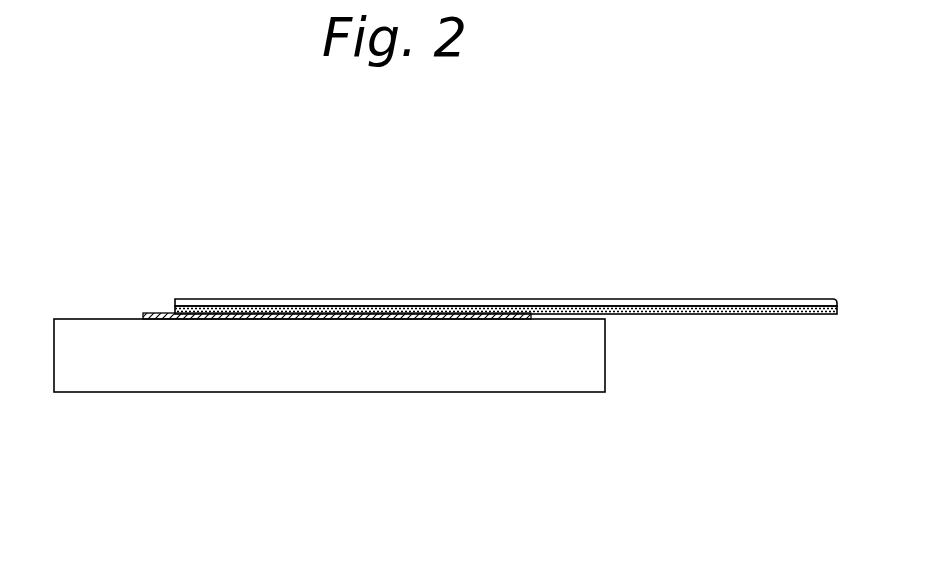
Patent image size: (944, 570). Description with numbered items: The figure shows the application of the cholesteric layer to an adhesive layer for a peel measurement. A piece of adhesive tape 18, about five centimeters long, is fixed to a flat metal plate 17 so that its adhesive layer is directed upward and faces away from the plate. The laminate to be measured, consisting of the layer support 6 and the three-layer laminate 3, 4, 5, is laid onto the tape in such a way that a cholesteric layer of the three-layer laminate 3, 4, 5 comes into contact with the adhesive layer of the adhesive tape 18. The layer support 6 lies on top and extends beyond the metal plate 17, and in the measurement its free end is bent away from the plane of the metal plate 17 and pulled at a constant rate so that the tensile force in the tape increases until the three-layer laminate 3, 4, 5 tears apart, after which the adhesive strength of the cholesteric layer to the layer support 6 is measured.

The flat metal plate 17 is at (329, 400).
The adhesive tape 18 is at (292, 273).
The layer support 6 is at (506, 241).
The layer of the three-layer laminate 5 is at (506, 365).
The layer of the three-layer laminate 4 is at (506, 365).
The layer of the three-layer laminate 3 is at (506, 365).